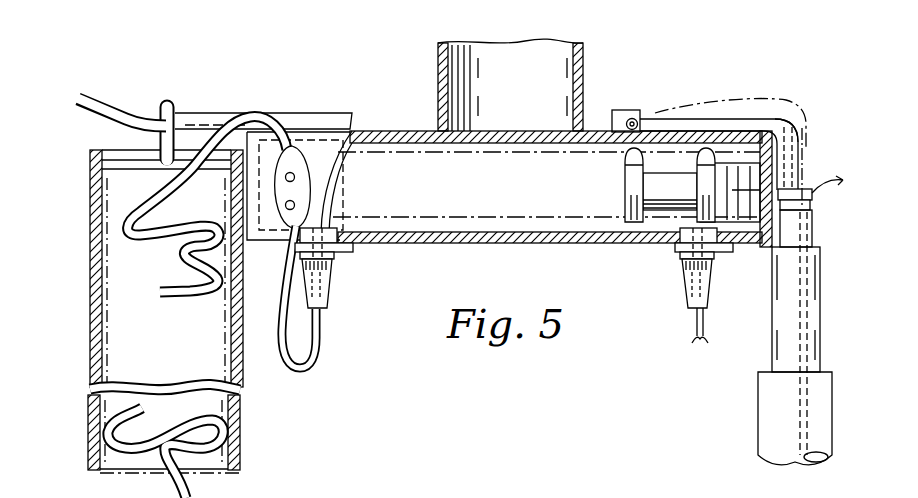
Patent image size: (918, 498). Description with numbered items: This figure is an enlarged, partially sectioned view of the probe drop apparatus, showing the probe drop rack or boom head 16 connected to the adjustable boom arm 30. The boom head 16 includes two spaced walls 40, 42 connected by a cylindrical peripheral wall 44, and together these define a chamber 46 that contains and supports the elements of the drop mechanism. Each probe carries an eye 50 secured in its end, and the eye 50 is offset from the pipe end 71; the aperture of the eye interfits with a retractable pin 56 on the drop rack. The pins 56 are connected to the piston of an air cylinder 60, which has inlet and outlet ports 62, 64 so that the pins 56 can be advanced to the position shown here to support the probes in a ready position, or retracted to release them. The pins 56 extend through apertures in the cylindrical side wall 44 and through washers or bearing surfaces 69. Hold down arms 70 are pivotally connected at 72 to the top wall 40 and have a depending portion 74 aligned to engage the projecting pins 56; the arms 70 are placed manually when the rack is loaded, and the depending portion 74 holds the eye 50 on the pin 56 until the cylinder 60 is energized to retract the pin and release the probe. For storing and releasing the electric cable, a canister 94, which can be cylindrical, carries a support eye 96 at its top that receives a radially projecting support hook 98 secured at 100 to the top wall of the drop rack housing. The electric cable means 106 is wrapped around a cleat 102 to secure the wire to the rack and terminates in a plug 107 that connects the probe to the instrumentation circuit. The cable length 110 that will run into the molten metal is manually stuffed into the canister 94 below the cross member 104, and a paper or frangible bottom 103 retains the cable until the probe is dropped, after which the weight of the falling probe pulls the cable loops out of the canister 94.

The probe rack 16 is at (446, 258).
The adjustable boom arm 30 is at (584, 51).
The top wall 40 is at (546, 178).
The spaced wall 42 is at (424, 129).
The cylindrical peripheral wall 44 is at (149, 268).
The chamber 46 is at (533, 196).
The eye 50 is at (753, 248).
The retractable pin 56 is at (811, 203).
The air cylinder 60 is at (660, 190).
The inlet port 62 is at (624, 156).
The outlet port 64 is at (697, 163).
The bearing surface 69 is at (801, 146).
The hold down arm 70 is at (716, 118).
The pipe end 71 is at (813, 234).
The pivot connection 72 is at (634, 116).
The depending portion 74 is at (802, 136).
The canister 94 is at (96, 301).
The support eye 96 is at (171, 104).
The support hook 98 is at (107, 99).
The hook attachment 100 is at (308, 136).
The cleat 102 is at (297, 188).
The frangible bottom 103 is at (112, 478).
The cross member 104 is at (104, 158).
The electric cable means 106 is at (319, 331).
The plug 107 is at (329, 284).
The cable length 110 is at (127, 223).